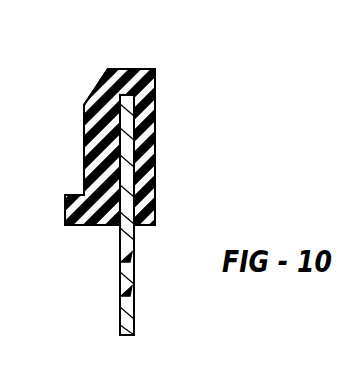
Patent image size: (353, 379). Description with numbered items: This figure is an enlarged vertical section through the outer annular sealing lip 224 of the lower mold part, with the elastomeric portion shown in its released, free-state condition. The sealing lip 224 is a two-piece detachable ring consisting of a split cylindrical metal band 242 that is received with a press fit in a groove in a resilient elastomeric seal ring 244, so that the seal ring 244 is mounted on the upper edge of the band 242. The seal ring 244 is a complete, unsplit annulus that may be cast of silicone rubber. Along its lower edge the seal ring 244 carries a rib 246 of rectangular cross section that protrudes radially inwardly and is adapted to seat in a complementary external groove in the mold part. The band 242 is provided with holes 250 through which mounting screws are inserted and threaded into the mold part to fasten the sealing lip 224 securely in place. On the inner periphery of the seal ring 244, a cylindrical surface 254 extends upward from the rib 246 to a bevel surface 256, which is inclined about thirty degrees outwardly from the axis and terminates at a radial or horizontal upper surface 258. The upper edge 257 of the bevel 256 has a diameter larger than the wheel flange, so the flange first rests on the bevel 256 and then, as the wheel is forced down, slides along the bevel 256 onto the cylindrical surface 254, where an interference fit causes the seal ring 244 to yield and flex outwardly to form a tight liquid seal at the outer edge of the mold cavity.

The outer annular sealing lip 224 is at (160, 78).
The split cylindrical metal band 242 is at (135, 240).
The resilient elastomeric seal ring 244 is at (147, 172).
The rib 246 is at (66, 196).
The holes 250 is at (135, 288).
The cylindrical surface 254 is at (84, 160).
The bevel surface 256 is at (93, 91).
The upper edge of bevel 257 is at (105, 69).
The upper surface 258 is at (128, 69).